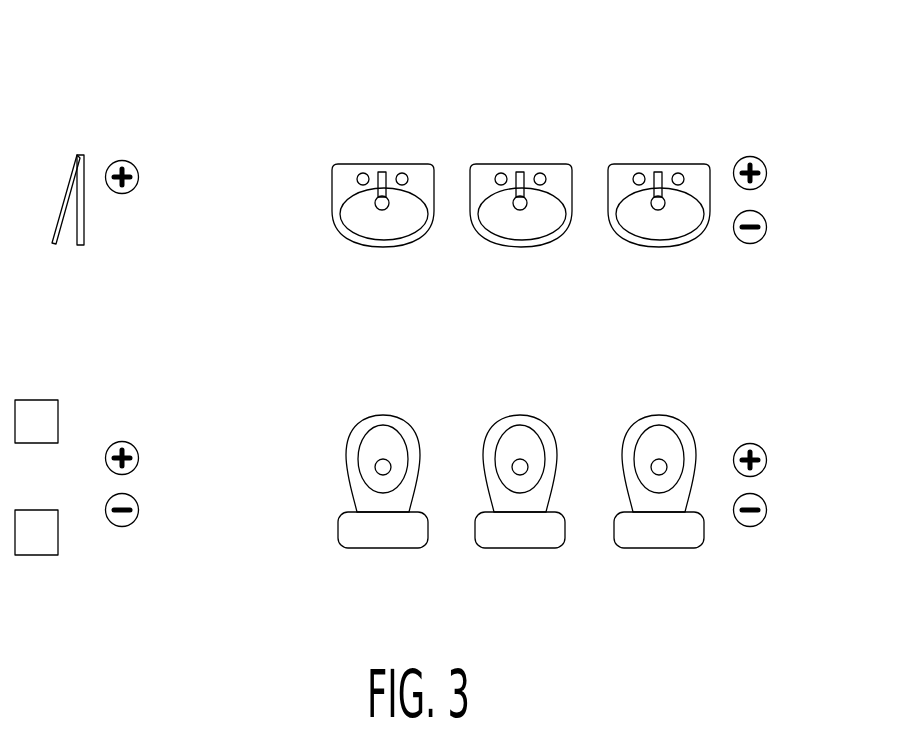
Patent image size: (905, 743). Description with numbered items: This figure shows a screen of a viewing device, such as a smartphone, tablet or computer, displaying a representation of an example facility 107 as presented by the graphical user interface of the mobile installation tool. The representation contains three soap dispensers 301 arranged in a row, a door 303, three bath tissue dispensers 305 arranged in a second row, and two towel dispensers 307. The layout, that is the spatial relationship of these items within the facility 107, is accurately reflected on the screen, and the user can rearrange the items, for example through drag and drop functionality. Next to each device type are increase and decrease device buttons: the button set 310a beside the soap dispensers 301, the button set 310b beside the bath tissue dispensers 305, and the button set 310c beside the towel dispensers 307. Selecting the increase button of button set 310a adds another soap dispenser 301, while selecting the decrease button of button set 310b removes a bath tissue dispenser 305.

The soap dispensers 301 is at (641, 148).
The bath tissue dispensers 305 is at (642, 400).
The facility 107 is at (668, 582).
The door 303 is at (67, 155).
The towel dispensers 307 is at (60, 528).
The button set 310a is at (760, 187).
The button set 310b is at (767, 498).
The button set 310c is at (135, 470).